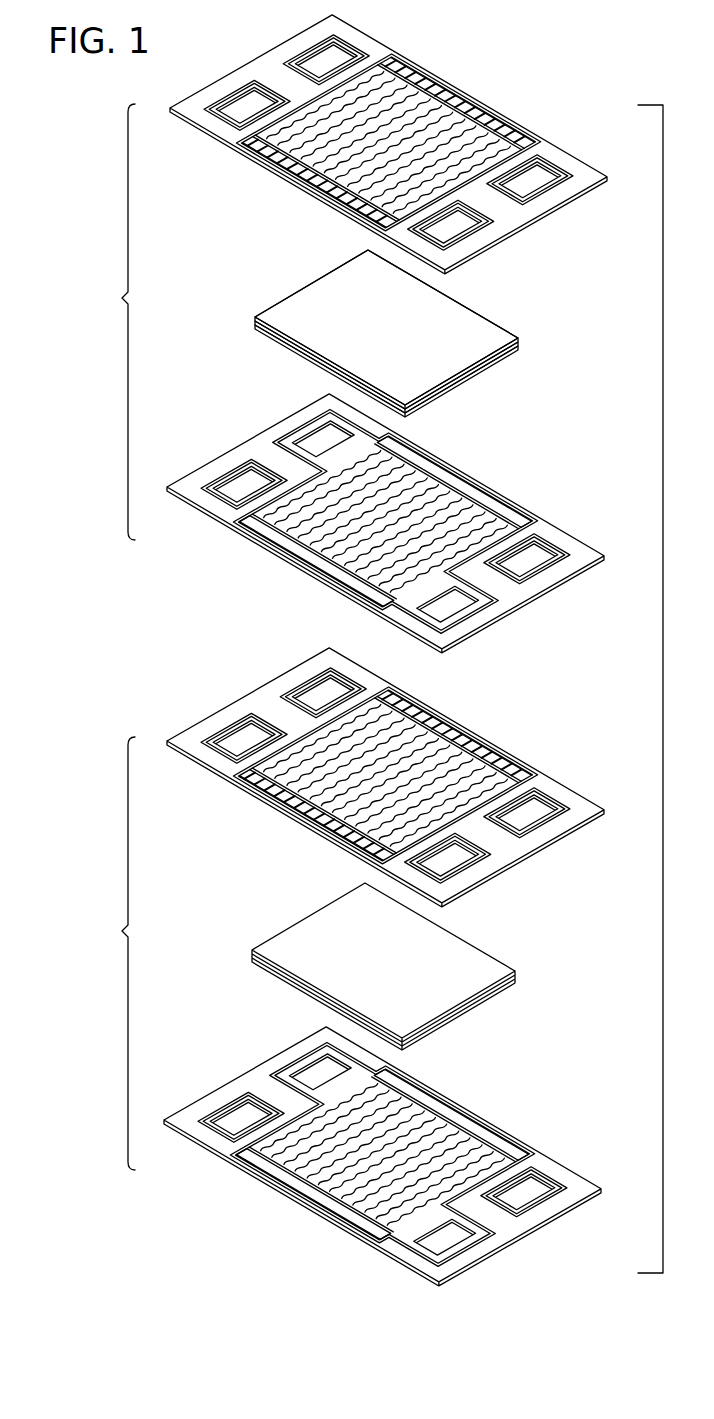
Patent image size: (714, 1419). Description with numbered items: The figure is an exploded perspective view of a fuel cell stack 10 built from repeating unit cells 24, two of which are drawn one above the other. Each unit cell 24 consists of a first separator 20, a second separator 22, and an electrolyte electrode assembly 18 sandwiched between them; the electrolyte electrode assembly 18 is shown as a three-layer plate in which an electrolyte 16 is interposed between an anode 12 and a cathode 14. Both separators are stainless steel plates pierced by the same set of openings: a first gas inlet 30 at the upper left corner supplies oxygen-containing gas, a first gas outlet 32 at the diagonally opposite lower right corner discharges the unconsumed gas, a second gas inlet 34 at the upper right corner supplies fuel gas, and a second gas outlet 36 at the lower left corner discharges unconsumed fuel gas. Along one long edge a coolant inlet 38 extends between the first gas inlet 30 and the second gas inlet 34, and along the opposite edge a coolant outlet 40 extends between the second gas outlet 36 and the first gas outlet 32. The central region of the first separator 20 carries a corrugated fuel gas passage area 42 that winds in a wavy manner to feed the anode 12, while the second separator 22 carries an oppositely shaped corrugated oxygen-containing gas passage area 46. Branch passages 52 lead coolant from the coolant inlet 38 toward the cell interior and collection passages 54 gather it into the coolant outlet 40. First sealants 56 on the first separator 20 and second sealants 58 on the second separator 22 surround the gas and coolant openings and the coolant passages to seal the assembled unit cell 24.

The stack 10 is at (73, 142).
The unit cell 24 is at (111, 637).
The first separator 20 is at (590, 172).
The second separator 22 is at (588, 550).
The electrolyte electrode assembly 18 is at (590, 313).
The anode 12 is at (497, 327).
The electrolyte 16 is at (518, 342).
The cathode 14 is at (503, 358).
The first gas inlet 30 is at (303, 62).
The first gas outlet 32 is at (475, 228).
The second gas inlet 34 is at (560, 184).
The second gas outlet 36 is at (225, 107).
The coolant inlet 38 is at (468, 116).
The coolant outlet 40 is at (250, 157).
The fuel gas passage area 42 is at (438, 150).
The oxygen-containing gas passage area 46 is at (437, 520).
The branch passages 52 is at (420, 77).
The collection passages 54 is at (350, 195).
The first sealants 56 is at (318, 44).
The second sealants 58 is at (320, 424).